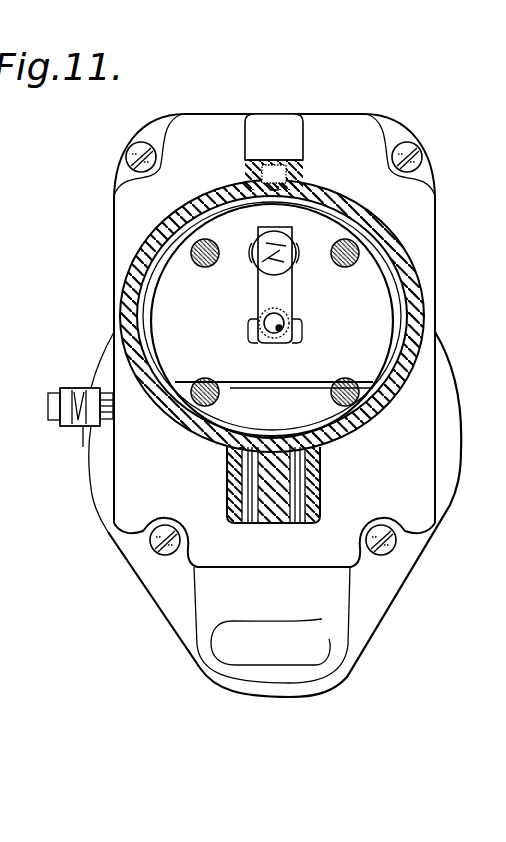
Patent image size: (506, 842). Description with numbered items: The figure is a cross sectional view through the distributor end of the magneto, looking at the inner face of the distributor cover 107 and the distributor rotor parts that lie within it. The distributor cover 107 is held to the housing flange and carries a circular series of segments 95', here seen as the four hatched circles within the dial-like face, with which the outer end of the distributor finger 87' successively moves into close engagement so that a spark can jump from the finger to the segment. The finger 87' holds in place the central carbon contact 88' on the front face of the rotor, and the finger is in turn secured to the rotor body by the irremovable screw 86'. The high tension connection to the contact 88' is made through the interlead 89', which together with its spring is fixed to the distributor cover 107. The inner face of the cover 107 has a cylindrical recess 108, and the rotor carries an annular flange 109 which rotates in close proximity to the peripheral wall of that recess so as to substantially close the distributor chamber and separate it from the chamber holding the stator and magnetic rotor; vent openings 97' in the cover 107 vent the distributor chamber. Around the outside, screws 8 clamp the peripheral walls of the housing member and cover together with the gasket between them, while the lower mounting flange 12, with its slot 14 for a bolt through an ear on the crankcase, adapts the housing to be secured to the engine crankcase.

The screw 8 is at (126, 154).
The flange 12 is at (343, 642).
The slot 14 is at (270, 642).
The irremovable screw 86' is at (260, 266).
The distributor finger 87' is at (294, 285).
The central carbon contact 88' is at (274, 341).
The interlead 89' is at (274, 152).
The segments 95' is at (278, 322).
The vent openings 97' is at (273, 503).
The distributor cover 107 is at (427, 263).
The cylindrical recess 108 is at (145, 313).
The annular flange 109 is at (396, 330).